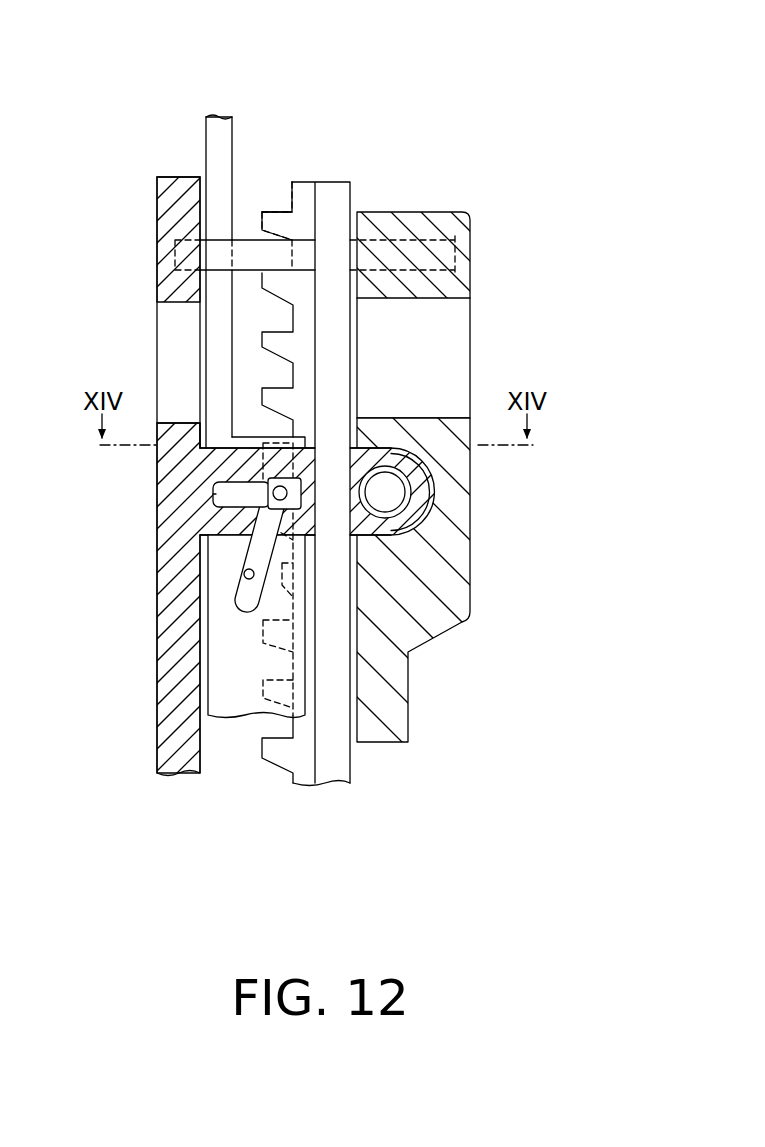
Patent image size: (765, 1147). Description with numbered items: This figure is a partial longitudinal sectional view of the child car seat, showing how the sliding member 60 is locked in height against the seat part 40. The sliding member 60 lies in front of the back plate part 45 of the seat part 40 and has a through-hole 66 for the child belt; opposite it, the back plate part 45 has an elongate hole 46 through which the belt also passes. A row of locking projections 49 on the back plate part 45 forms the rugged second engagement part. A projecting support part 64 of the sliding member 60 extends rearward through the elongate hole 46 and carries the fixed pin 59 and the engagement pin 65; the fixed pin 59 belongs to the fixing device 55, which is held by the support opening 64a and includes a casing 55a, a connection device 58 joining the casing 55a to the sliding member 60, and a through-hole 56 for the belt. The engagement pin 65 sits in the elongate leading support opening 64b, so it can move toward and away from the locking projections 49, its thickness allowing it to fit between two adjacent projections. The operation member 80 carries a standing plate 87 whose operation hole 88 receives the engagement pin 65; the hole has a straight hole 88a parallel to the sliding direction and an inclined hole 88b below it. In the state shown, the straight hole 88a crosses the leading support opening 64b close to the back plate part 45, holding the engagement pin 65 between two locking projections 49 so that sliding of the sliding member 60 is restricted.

The seat part 40 is at (346, 501).
The back plate part 45 is at (321, 783).
The elongate hole 46 is at (340, 345).
The locking projection 49 is at (277, 282).
The fixing device 55 is at (452, 204).
The casing 55a is at (442, 423).
The through-hole 56 is at (455, 315).
The connection device 58 is at (247, 237).
The fixed pin 59 is at (393, 492).
The sliding member 60 is at (181, 780).
The projecting support part 64 is at (382, 525).
The support opening 64a is at (378, 507).
The leading support opening 64b is at (227, 463).
The engagement pin 65 is at (216, 494).
The through-hole 66 is at (163, 304).
The operation member 80 is at (225, 114).
The standing plate 87 is at (272, 663).
The operation hole 88 is at (257, 605).
The straight hole 88a is at (270, 483).
The inclined hole 88b is at (245, 577).